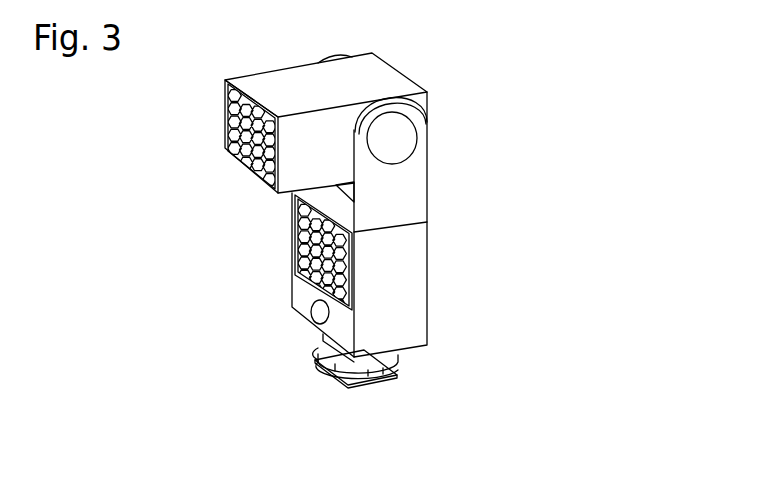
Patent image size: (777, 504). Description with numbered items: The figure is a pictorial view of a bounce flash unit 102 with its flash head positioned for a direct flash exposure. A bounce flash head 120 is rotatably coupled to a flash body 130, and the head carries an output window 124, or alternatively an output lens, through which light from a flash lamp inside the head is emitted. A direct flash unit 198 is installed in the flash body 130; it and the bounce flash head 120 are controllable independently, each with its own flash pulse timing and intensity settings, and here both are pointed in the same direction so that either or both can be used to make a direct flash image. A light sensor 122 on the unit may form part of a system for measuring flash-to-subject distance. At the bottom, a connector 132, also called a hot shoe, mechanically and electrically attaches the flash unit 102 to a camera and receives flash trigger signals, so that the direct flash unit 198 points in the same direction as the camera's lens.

The bounce flash unit 102 is at (527, 62).
The bounce flash head 120 is at (280, 66).
The output window 124 is at (227, 149).
The flash body 130 is at (427, 297).
The direct flash unit 198 is at (303, 279).
The light sensor 122 is at (310, 322).
The connector 132 is at (332, 375).